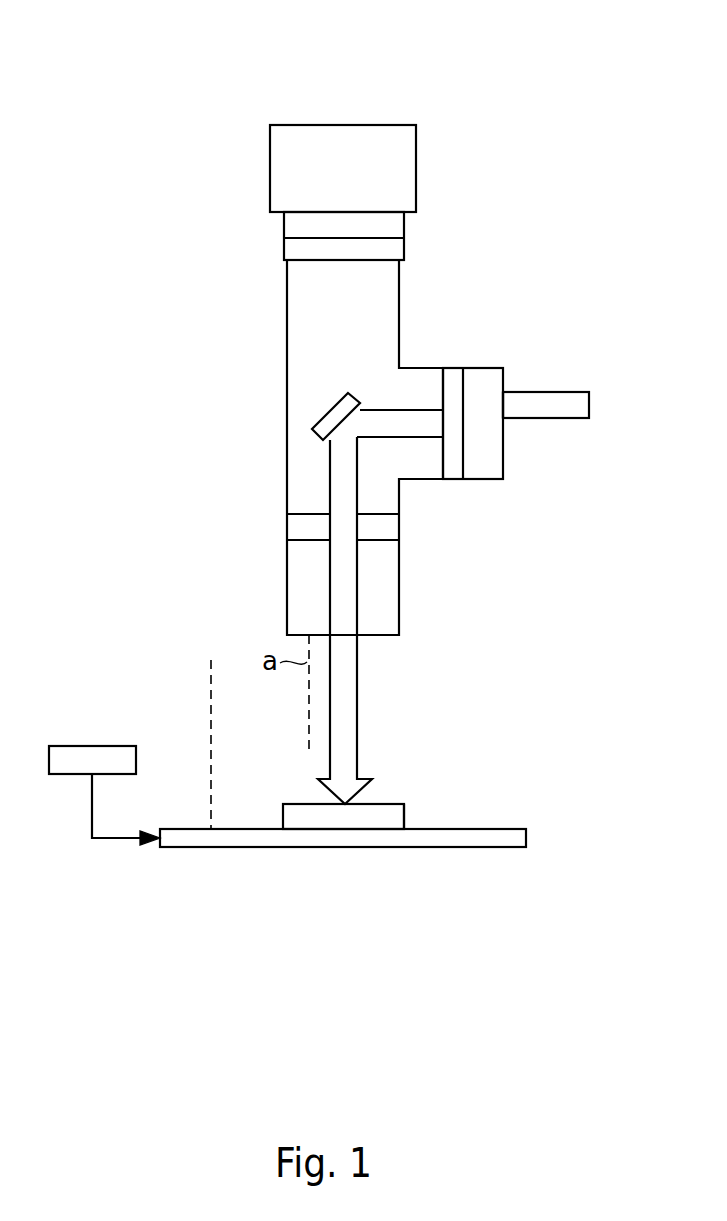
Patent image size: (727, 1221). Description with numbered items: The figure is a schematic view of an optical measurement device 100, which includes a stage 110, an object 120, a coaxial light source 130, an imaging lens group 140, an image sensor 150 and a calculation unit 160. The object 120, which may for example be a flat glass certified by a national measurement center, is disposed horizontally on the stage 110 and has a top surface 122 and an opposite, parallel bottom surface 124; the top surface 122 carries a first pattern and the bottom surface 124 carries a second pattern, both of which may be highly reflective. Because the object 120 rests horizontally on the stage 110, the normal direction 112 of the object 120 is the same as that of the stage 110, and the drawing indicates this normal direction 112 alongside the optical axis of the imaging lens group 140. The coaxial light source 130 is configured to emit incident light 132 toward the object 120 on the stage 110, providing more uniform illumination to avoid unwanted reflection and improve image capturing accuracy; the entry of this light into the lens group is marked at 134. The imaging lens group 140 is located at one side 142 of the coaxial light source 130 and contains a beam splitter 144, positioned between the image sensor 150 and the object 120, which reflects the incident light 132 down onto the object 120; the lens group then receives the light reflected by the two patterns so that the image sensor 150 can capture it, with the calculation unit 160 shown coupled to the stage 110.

The optical measurement device 100 is at (646, 44).
The stage 110 is at (526, 838).
The normal direction 112 is at (209, 694).
The object 120 is at (288, 813).
The top surface 122 is at (378, 798).
The bottom surface 124 is at (392, 820).
The coaxial light source 130 is at (564, 398).
The incident light 132 is at (429, 413).
The gas inlet 134 is at (526, 398).
The imaging lens group 140 is at (287, 373).
The side 142 is at (400, 185).
The beam splitter 144 is at (318, 421).
The image sensor 150 is at (409, 152).
The calculation unit 160 is at (74, 752).